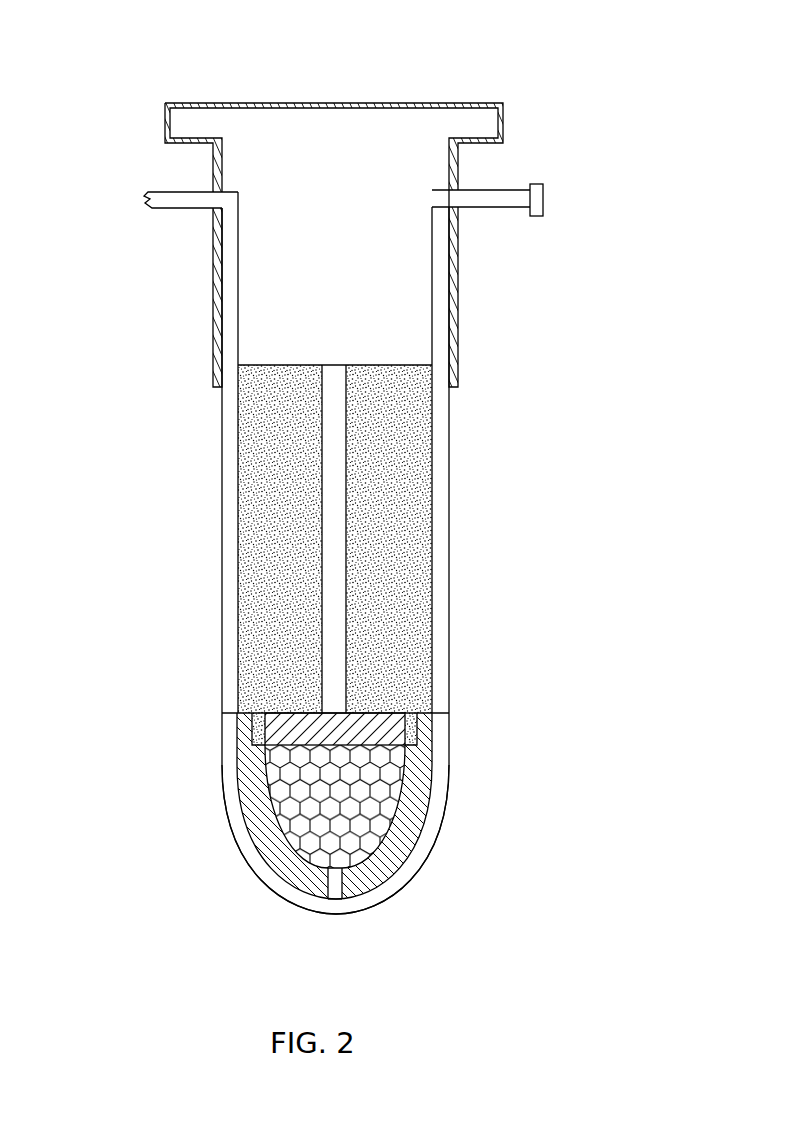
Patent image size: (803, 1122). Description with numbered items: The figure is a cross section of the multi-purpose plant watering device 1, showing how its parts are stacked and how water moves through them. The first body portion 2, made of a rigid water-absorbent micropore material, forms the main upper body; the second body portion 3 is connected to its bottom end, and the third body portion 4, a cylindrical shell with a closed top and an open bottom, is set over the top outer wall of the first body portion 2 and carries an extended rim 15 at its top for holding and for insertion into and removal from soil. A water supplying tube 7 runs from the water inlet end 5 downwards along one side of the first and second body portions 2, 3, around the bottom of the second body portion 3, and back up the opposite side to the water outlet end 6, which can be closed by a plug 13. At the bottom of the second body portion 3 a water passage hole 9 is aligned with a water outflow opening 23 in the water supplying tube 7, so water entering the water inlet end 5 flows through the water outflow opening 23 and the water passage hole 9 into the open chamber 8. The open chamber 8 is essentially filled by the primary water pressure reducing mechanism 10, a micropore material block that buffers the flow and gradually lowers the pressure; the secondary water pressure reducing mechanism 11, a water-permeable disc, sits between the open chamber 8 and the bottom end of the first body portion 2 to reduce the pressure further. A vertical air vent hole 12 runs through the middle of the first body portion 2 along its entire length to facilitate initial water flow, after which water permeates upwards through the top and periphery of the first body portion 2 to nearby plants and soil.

The multi-purpose plant watering device 1 is at (232, 46).
The first body portion 2 is at (393, 445).
The second body portion 3 is at (247, 842).
The third body portion 4 is at (285, 263).
The water inlet end 5 is at (187, 203).
The water outlet end 6 is at (480, 200).
The water supplying tube 7 is at (412, 862).
The open chamber 8 is at (380, 790).
The water passage hole 9 is at (325, 910).
The primary water pressure reducing mechanism 10 is at (303, 795).
The secondary water pressure reducing mechanism 11 is at (373, 728).
The air vent hole 12 is at (337, 482).
The plug 13 is at (543, 198).
The extended rim 15 is at (480, 125).
The water outflow opening 23 is at (335, 900).